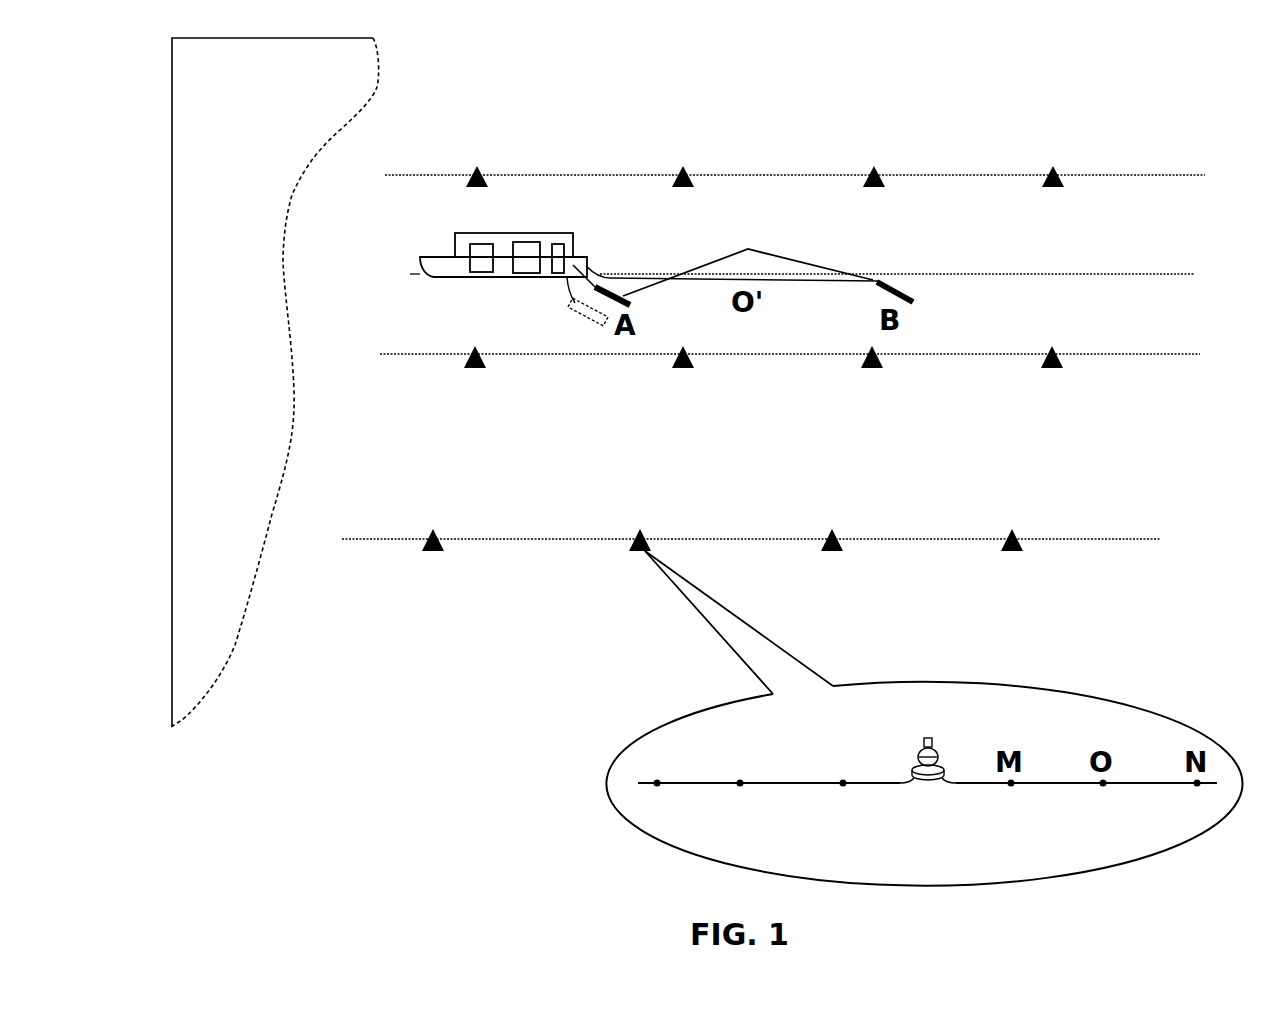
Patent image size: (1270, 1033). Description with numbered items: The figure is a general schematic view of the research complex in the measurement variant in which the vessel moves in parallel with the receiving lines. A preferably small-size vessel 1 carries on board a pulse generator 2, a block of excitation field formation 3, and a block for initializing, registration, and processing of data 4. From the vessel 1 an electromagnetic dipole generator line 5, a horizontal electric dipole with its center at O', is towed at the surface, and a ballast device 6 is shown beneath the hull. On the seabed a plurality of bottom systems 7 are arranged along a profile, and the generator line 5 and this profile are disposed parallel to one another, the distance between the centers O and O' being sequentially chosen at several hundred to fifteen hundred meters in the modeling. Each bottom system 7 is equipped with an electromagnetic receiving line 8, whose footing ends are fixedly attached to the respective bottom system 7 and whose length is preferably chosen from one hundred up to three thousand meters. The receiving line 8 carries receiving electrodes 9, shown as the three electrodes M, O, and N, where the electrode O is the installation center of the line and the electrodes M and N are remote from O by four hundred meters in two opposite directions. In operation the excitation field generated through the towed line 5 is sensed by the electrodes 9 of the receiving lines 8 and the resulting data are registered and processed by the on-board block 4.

The vessel 1 is at (453, 270).
The pulse generator 2 is at (483, 258).
The block of excitation field formation 3 is at (527, 255).
The block for initializing, registration, and processing of data 4 is at (562, 257).
The electromagnetic dipole generator line 5 is at (743, 263).
The ballast device 6 is at (592, 312).
The bottom systems 7 is at (650, 551).
The electromagnetic receiving line 8 is at (968, 790).
The receiving electrodes 9 is at (1197, 783).